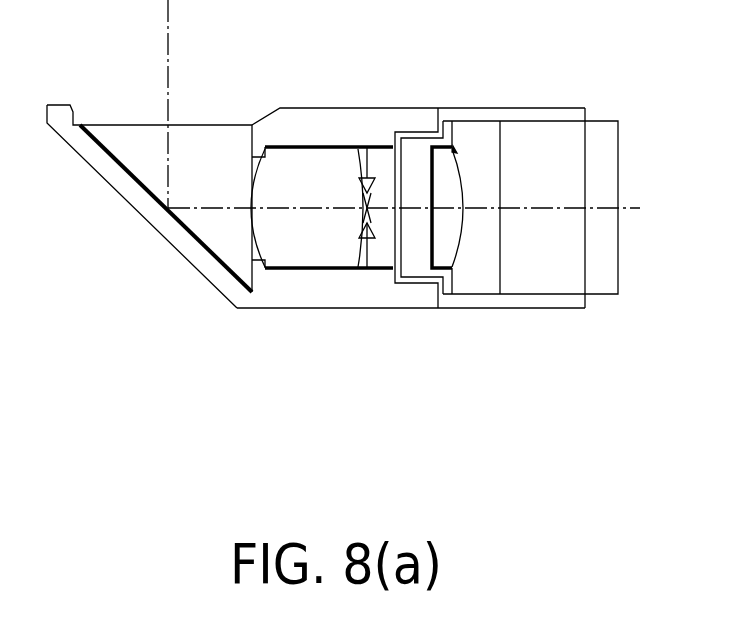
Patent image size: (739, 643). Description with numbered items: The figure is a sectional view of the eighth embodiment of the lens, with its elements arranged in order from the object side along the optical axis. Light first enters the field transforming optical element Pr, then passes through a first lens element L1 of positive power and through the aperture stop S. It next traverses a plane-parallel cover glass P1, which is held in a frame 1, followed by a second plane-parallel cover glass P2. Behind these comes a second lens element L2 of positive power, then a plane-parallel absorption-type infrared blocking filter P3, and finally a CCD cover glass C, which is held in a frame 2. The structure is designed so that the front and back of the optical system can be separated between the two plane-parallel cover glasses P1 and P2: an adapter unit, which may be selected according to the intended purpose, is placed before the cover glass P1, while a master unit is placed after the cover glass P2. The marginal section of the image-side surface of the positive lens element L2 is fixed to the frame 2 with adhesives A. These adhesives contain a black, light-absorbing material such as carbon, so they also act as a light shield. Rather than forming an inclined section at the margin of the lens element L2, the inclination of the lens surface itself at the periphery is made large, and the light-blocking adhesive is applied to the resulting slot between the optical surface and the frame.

The field transforming optical element Pr is at (218, 130).
The aperture stop S is at (358, 150).
The adhesives A is at (456, 150).
The frame 1 is at (272, 288).
The first lens element L1 is at (330, 257).
The plane-parallel cover glass P1 is at (385, 255).
The plane-parallel cover glass P2 is at (418, 255).
The second lens element L2 is at (456, 270).
The frame 2 is at (525, 298).
The plane-parallel absorption-type infrared blocking filter P3 is at (565, 270).
The CCD cover glass C is at (607, 268).